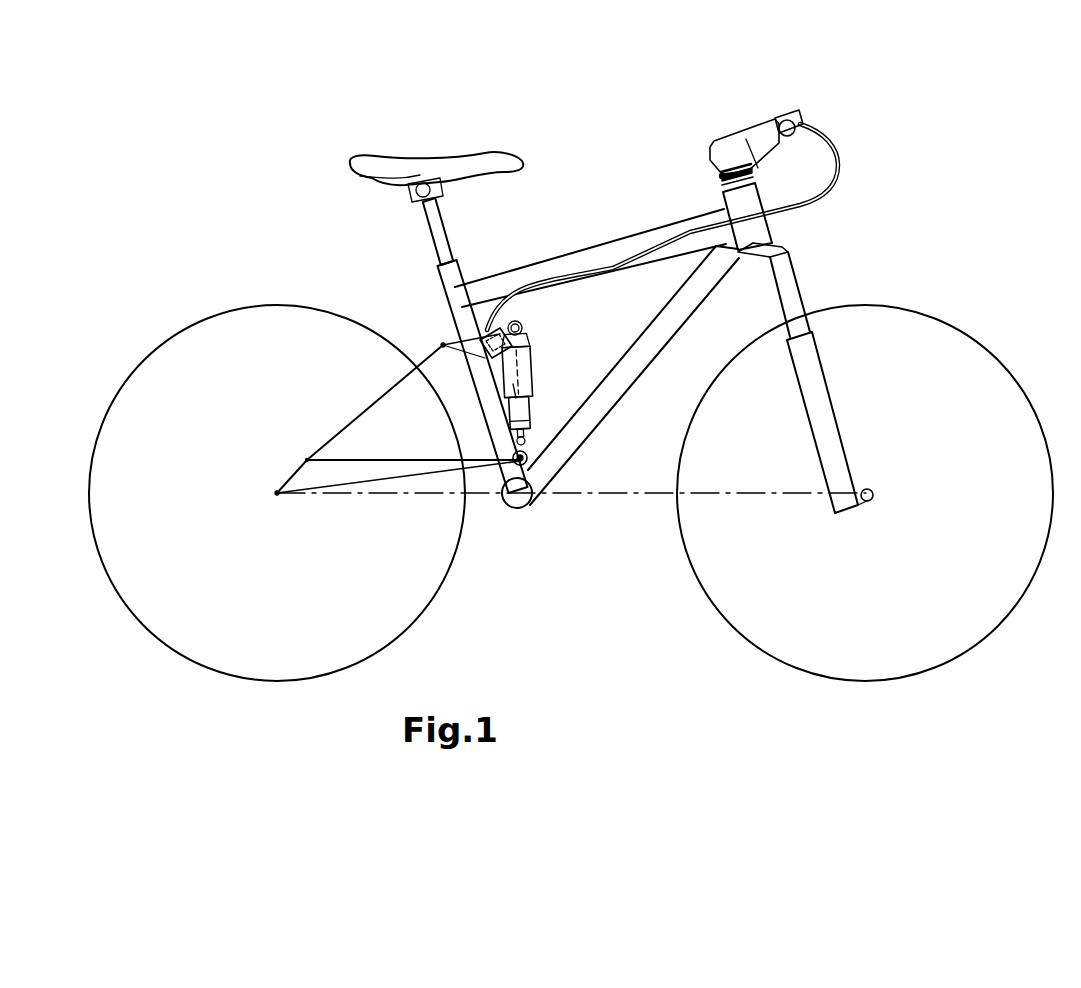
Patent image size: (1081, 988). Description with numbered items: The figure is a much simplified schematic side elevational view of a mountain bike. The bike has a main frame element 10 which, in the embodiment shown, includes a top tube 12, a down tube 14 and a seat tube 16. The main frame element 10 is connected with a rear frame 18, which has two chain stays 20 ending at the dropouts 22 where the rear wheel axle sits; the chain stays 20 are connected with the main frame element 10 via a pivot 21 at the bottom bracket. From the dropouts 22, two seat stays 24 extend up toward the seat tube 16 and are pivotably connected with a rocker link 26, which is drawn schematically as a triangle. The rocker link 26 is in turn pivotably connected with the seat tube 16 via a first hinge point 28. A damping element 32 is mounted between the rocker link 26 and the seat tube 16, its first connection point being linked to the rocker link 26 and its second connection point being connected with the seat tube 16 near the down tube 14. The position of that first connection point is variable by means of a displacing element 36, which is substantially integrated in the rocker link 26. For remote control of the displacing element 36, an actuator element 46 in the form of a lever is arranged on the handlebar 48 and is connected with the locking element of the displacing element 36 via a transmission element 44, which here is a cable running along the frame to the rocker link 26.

The main frame element 10 is at (583, 232).
The top tube 12 is at (655, 238).
The down tube 14 is at (616, 390).
The seat tube 16 is at (455, 307).
The rear frame 18 is at (311, 419).
The chain stays 20 is at (341, 477).
The pivot 21 is at (528, 462).
The dropouts 22 is at (278, 494).
The seat stays 24 is at (368, 406).
The rocker link 26 is at (481, 340).
The first hinge point 28 is at (548, 381).
The damping element 32 is at (512, 384).
The displacing element 36 is at (486, 336).
The transmission element 44 is at (836, 152).
The actuator element 46 is at (795, 116).
The handlebar 48 is at (760, 140).